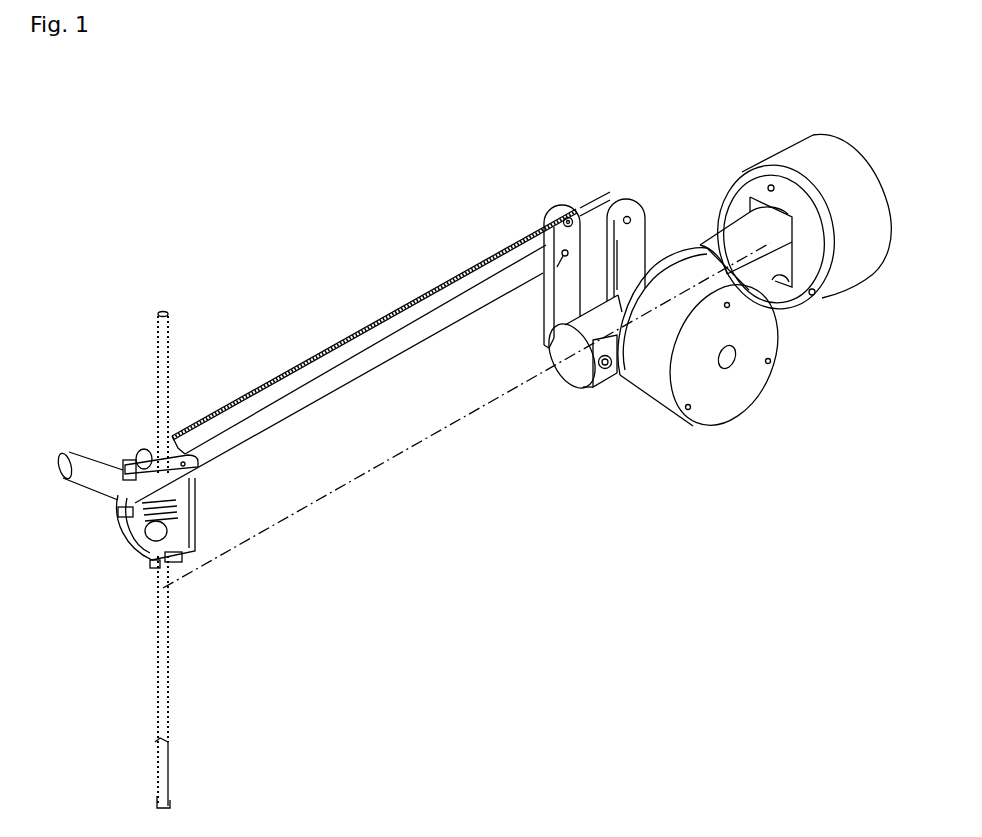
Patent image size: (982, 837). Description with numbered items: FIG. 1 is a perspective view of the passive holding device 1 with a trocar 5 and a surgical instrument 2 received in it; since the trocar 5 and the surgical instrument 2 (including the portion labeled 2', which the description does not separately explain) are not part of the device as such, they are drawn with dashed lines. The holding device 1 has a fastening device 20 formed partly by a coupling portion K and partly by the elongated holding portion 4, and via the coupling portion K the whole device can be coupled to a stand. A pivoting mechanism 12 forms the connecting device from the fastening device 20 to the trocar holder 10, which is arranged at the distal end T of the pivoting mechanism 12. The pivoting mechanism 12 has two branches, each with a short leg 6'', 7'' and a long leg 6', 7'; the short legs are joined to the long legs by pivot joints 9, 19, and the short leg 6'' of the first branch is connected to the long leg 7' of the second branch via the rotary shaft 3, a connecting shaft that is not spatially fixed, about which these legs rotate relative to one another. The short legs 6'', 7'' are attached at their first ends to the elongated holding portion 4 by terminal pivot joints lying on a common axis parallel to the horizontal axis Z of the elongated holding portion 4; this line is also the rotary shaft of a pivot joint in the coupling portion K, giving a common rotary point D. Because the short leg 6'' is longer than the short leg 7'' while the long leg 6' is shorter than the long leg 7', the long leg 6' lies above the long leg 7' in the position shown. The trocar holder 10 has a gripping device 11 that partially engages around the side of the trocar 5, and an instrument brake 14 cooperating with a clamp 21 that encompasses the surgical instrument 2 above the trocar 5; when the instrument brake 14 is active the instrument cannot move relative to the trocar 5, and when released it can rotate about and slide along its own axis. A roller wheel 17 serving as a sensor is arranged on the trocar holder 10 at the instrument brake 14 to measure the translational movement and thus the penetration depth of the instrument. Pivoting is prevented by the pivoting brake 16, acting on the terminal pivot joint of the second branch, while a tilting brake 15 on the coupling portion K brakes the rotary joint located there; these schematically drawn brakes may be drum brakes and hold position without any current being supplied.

The passive holding device 1 is at (230, 157).
The surgical instrument 2 is at (136, 559).
The rod end 2' is at (205, 778).
The rotary shaft 3 is at (543, 277).
The elongated holding portion 4 is at (573, 382).
The trocar 5 is at (146, 675).
The long leg of the first branch 6' is at (469, 221).
The short leg of the first branch 6'' is at (580, 274).
The long leg of the second branch 7' is at (612, 212).
The short leg of the second branch 7'' is at (662, 240).
The pivot joint 9 is at (562, 215).
The trocar holder 10 is at (110, 532).
The gripping device 11 is at (195, 540).
The pivoting mechanism 12 is at (325, 333).
The instrument brake 14 is at (80, 454).
The tilting brake 15 is at (845, 260).
The pivoting brake 16 is at (715, 402).
The roller wheel 17 is at (146, 448).
The pivot joint 19 is at (628, 216).
The fastening device 20 is at (605, 392).
The clamp 21 is at (198, 478).
The coupling portion K is at (706, 222).
The distal end T is at (182, 423).
The horizontal axis Z is at (466, 415).
The common rotary point D is at (160, 594).